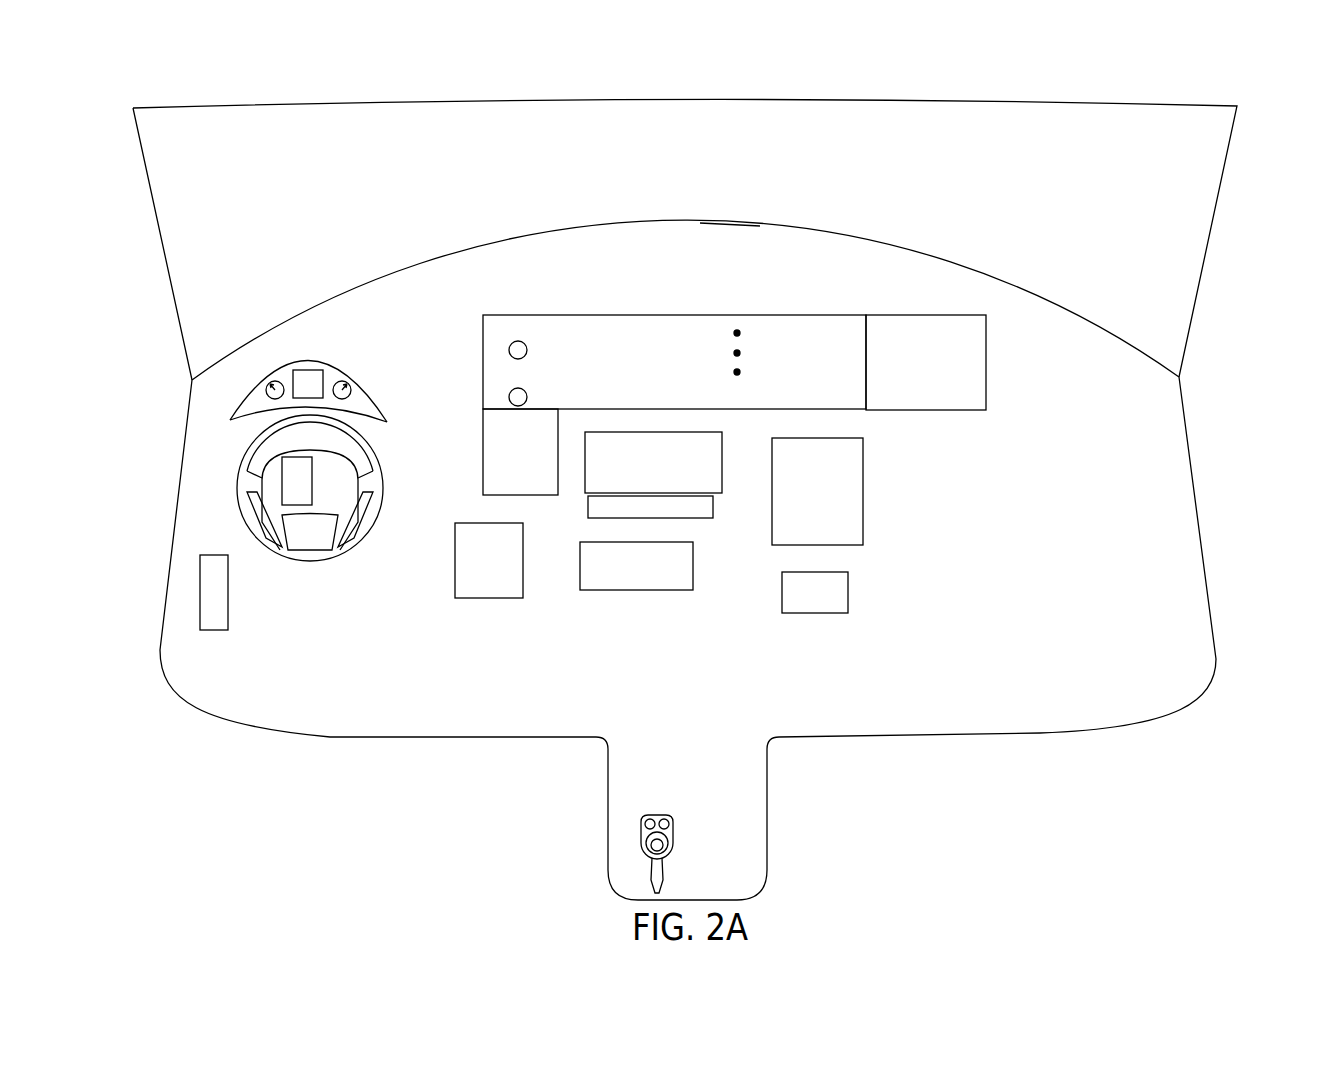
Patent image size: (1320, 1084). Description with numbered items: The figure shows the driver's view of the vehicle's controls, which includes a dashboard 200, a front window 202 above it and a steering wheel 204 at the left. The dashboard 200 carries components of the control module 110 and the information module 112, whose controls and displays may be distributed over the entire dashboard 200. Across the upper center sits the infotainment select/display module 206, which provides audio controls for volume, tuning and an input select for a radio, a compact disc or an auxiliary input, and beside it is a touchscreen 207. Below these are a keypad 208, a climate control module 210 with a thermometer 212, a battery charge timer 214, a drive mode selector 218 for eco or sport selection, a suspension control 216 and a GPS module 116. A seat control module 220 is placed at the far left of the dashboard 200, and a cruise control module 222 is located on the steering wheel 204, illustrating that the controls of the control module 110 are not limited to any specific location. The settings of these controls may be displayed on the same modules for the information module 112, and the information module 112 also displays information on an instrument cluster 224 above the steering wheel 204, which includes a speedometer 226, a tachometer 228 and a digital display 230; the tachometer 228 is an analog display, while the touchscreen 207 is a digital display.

The control module 110 is at (632, 232).
The information module 112 is at (735, 232).
The GPS module 116 is at (850, 592).
The dashboard 200 is at (1178, 406).
The front window 202 is at (1190, 269).
The steering wheel 204 is at (249, 513).
The infotainment select/display module 206 is at (806, 320).
The touchscreen 207 is at (980, 365).
The keypad 208 is at (481, 458).
The climate control module 210 is at (717, 462).
The thermometer 212 is at (712, 507).
The battery charge timer 214 is at (863, 488).
The suspension control 216 is at (693, 567).
The drive mode selector 218 is at (525, 567).
The seat control module 220 is at (200, 590).
The cruise control module 222 is at (282, 479).
The instrument cluster 224 is at (308, 370).
The speedometer 226 is at (272, 388).
The tachometer 228 is at (346, 387).
The digital display 230 is at (316, 369).